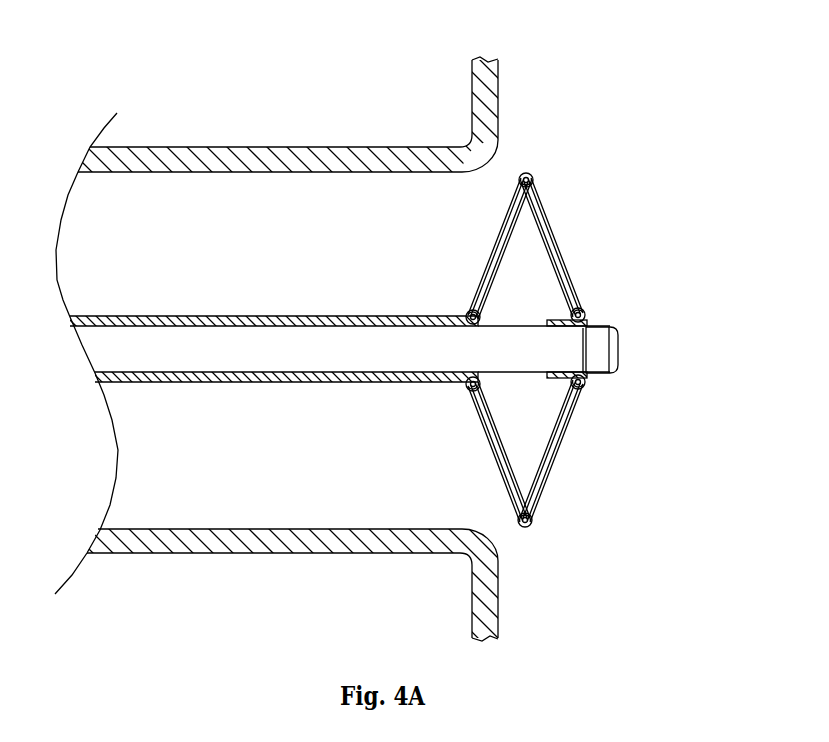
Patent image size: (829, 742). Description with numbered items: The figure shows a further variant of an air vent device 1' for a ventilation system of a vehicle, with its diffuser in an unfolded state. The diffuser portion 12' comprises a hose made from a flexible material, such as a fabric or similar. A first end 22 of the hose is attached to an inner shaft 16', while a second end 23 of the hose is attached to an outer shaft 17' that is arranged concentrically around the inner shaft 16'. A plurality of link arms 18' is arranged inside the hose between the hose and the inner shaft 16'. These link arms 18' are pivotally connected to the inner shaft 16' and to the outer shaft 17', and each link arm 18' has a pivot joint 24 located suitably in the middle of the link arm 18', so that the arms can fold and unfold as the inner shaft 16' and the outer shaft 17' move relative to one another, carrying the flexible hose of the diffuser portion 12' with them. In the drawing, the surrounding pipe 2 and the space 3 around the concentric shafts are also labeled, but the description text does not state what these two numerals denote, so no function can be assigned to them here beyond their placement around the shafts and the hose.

The air vent device 1' is at (657, 49).
The outer pipe 2 is at (187, 160).
The annular space 3 is at (274, 240).
The outer shaft 17' is at (414, 371).
The inner shaft 16' is at (567, 395).
The first end of the hose 22 is at (590, 322).
The link arm 18' is at (551, 348).
The pivot joint 24 is at (528, 175).
The diffuser portion 12' is at (588, 365).
The second end of the hose 23 is at (470, 388).